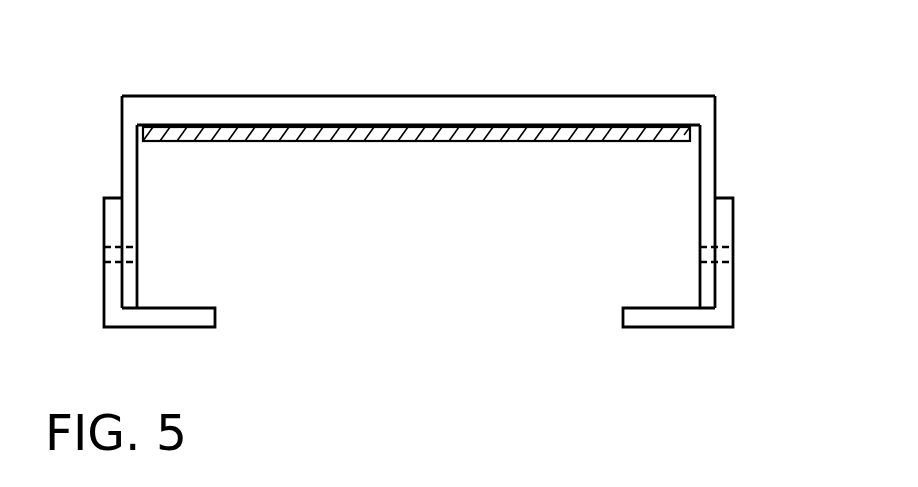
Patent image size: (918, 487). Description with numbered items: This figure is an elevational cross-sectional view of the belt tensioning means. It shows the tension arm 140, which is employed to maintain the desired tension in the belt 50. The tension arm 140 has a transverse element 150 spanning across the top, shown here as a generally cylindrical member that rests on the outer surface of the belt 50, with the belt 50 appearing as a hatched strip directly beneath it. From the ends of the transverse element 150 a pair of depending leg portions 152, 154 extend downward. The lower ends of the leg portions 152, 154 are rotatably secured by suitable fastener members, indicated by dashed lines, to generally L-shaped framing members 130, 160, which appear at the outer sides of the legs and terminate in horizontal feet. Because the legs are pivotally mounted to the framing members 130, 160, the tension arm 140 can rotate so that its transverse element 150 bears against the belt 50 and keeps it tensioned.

The tension arm 140 is at (470, 87).
The transverse element 150 is at (377, 95).
The depending leg portion 152 is at (122, 158).
The depending leg portion 154 is at (715, 163).
The belt 50 is at (243, 142).
The L-shaped framing member 130 is at (104, 236).
The L-shaped framing member 160 is at (733, 222).